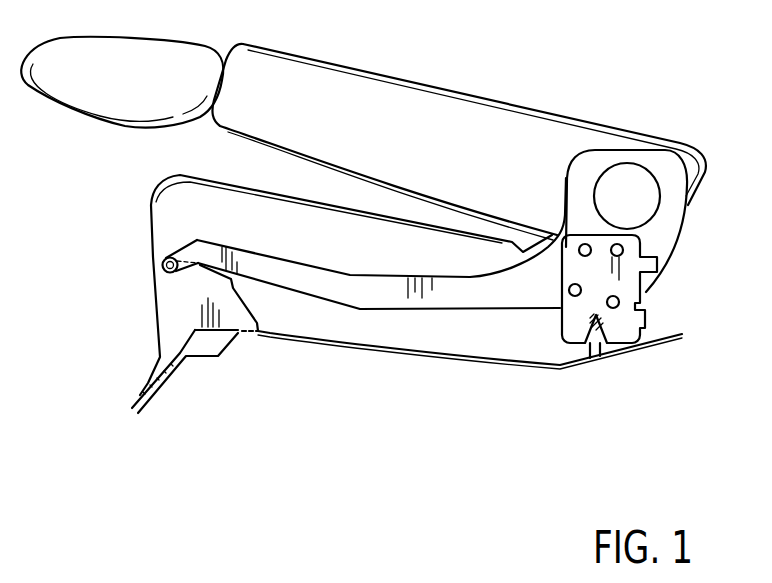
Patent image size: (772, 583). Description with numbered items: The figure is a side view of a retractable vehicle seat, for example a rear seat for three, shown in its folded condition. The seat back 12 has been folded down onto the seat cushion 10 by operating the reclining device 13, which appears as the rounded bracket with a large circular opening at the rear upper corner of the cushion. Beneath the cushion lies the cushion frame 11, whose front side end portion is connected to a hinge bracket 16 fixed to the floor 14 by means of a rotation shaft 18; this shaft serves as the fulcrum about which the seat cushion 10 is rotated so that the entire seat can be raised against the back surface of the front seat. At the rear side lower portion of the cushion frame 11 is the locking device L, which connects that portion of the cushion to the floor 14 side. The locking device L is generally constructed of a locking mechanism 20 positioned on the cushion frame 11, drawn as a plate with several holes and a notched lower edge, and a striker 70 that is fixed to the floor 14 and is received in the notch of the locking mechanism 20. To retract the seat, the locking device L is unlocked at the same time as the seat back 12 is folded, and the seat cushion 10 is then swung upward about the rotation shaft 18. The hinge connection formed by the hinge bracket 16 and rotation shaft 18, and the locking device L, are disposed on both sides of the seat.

The seat cushion 10 is at (322, 250).
The cushion frame 11 is at (378, 298).
The seat back 12 is at (421, 103).
The reclining device 13 is at (630, 162).
The floor 14 is at (459, 366).
The hinge bracket 16 is at (174, 306).
The rotation shaft 18 is at (163, 268).
The locking mechanism 20 is at (563, 320).
The striker 70 is at (590, 347).
The locking device L is at (653, 306).